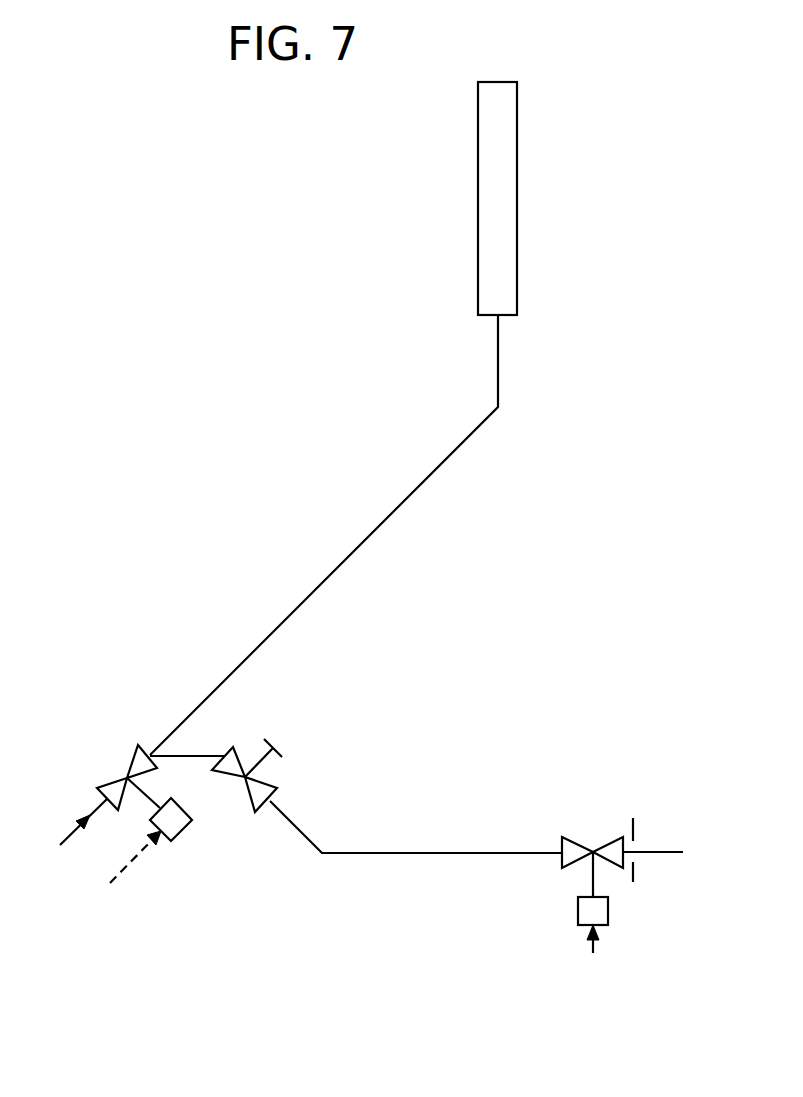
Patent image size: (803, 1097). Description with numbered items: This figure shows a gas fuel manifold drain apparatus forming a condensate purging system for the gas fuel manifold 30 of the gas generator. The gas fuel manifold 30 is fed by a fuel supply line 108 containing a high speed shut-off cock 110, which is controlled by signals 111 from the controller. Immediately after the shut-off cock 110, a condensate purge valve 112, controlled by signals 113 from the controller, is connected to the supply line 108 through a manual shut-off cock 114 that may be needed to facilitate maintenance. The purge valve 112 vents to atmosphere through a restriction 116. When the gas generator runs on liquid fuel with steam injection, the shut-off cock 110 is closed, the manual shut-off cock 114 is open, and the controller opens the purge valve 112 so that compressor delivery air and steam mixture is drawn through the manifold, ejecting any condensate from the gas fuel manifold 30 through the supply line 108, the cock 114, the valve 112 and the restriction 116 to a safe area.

The gas fuel manifold 30 is at (508, 162).
The fuel supply line 108 is at (267, 638).
The high speed shut-off cock 110 is at (126, 777).
The signals 111 is at (118, 868).
The condensate purge valve 112 is at (593, 850).
The signals 113 is at (595, 970).
The manual shut-off cock 114 is at (248, 797).
The restriction 116 is at (634, 851).